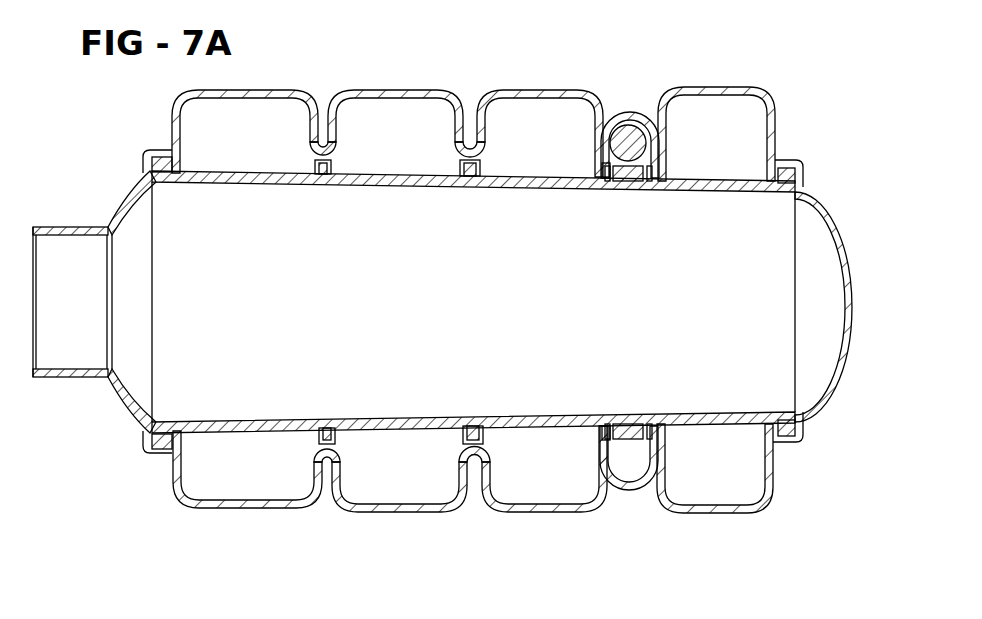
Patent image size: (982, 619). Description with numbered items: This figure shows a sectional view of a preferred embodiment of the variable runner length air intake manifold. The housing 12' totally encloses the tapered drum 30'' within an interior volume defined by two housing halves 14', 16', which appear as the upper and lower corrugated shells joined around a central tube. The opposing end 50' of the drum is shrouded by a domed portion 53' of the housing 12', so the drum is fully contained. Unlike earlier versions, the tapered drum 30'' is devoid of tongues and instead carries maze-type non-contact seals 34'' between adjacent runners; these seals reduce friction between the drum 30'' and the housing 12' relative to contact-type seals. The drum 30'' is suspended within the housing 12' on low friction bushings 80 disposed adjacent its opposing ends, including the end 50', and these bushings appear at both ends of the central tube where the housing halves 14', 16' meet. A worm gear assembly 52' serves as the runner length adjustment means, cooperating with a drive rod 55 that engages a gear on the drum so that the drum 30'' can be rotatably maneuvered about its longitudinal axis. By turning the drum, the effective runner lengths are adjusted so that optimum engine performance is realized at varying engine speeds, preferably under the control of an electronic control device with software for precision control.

The housing 12' is at (453, 292).
The housing half 14' is at (490, 96).
The housing half 16' is at (473, 498).
The tapered drum 30'' is at (473, 302).
The non-contact seal 34'' is at (439, 302).
The opposing end 50' is at (780, 341).
The worm gear assembly 52' is at (617, 302).
The portion of the housing 53' is at (830, 341).
The drive rod 55 is at (609, 147).
The low friction bushing 80 is at (780, 163).